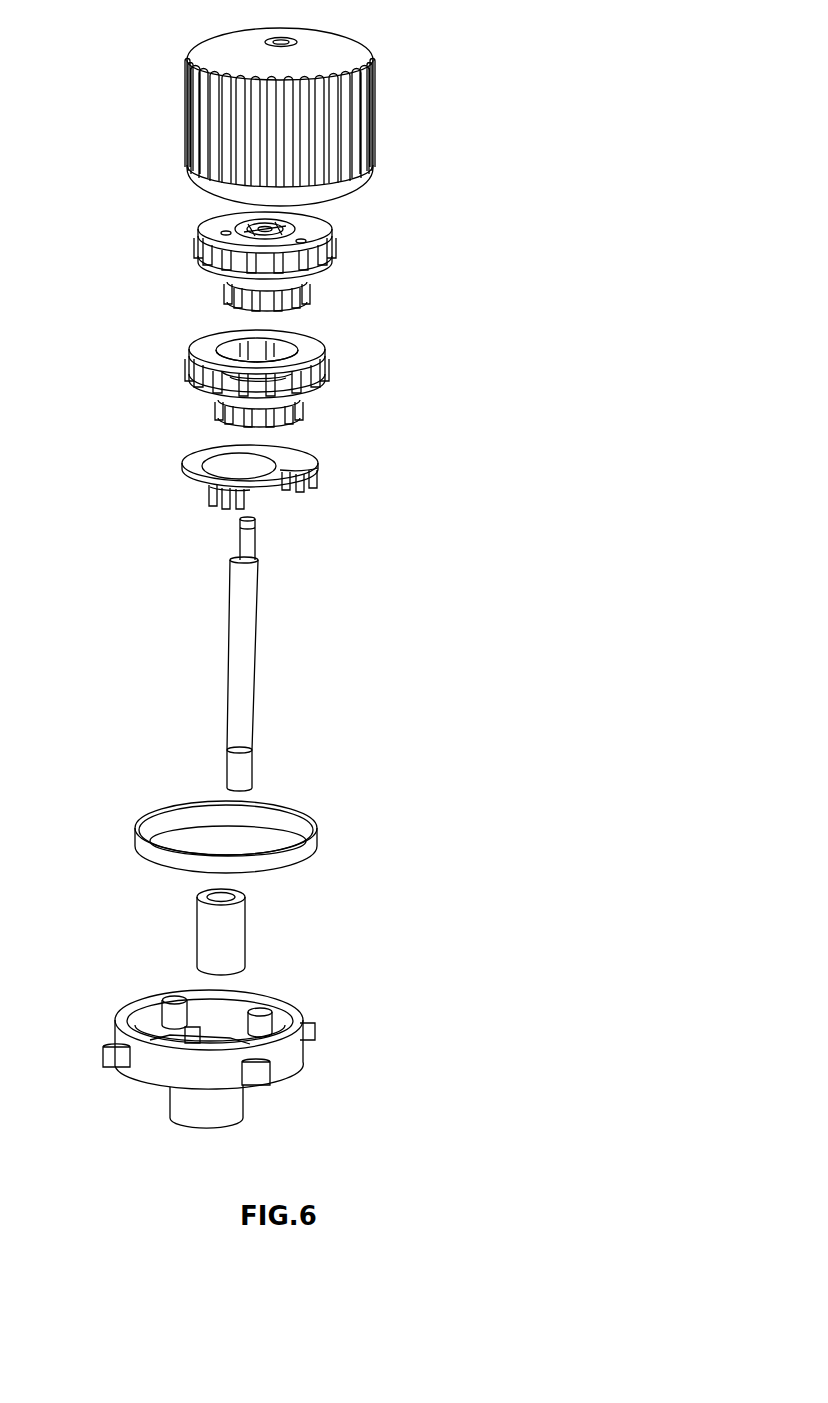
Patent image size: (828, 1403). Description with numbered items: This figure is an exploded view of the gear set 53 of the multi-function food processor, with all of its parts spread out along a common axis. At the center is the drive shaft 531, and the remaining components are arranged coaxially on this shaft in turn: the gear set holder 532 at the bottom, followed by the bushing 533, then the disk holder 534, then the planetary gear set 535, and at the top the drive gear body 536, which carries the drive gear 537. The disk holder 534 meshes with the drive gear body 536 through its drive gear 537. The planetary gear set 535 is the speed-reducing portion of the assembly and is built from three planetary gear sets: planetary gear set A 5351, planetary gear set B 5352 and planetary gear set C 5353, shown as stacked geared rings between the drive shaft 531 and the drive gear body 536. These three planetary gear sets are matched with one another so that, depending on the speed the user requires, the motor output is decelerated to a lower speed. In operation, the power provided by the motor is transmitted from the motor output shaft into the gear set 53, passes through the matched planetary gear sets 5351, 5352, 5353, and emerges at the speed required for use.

The gear set 53 is at (445, 613).
The drive shaft 531 is at (243, 655).
The gear set holder 532 is at (290, 1023).
The bushing 533 is at (240, 930).
The disk holder 534 is at (312, 852).
The planetary gear set 535 is at (498, 350).
The planetary gear set A 5351 is at (333, 262).
The planetary gear set B 5352 is at (327, 366).
The planetary gear set C 5353 is at (318, 464).
The knob 536 is at (328, 60).
The drive gear 537 is at (335, 148).